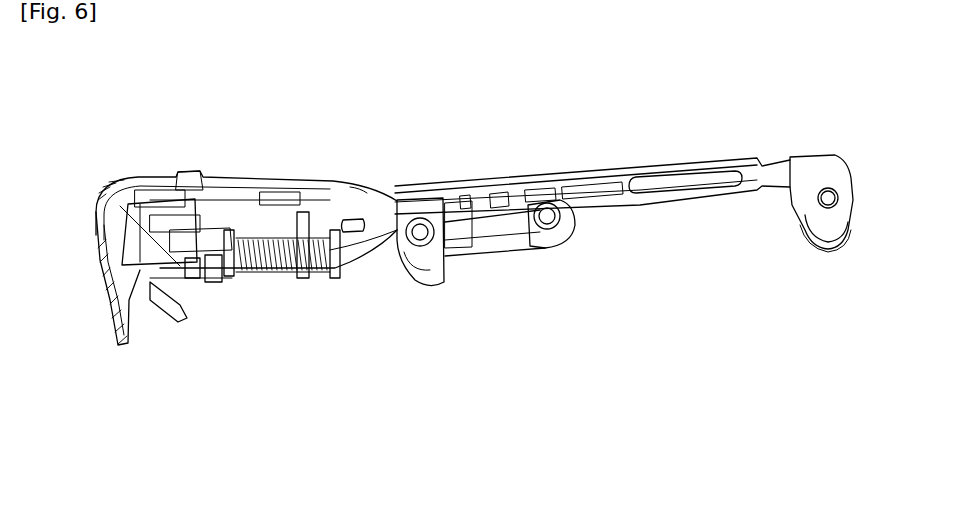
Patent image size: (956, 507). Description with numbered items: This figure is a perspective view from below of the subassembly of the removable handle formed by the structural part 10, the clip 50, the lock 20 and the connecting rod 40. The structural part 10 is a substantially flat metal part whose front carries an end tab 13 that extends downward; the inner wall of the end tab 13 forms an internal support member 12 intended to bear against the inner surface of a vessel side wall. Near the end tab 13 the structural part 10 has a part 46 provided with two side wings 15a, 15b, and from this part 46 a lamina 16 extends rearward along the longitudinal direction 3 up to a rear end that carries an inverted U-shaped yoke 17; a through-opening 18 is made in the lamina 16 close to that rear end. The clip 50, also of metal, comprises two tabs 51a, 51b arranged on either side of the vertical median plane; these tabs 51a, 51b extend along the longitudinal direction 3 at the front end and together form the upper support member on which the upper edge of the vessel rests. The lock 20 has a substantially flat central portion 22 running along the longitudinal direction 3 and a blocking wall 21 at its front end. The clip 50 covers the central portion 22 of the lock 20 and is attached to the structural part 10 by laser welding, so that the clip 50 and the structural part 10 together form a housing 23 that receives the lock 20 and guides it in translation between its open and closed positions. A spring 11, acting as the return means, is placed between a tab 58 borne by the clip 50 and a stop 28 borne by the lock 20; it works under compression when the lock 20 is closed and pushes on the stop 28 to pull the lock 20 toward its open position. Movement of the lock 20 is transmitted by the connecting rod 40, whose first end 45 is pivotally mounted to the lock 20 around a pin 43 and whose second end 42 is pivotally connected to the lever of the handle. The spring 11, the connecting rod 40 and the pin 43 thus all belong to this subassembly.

The longitudinal direction 3 is at (862, 173).
The structural part 10 is at (398, 193).
The spring 11 is at (277, 272).
The internal support member 12 is at (138, 288).
The end tab 13 is at (118, 272).
The side wing 15a is at (282, 195).
The side wing 15b is at (217, 280).
The lamina 16 is at (630, 193).
The inverted U-shaped yoke 17 is at (822, 173).
The through-opening 18 is at (597, 193).
The lock 20 is at (346, 222).
The blocking wall 21 is at (163, 257).
The central portion 22 is at (225, 268).
The housing 23 is at (297, 230).
The stop 28 is at (318, 255).
The connecting rod 40 is at (492, 235).
The second end 42 is at (528, 233).
The pin 43 is at (422, 240).
The first end 45 is at (447, 232).
The part provided with two side wings 46 is at (242, 220).
The clip 50 is at (273, 280).
The tab 51a is at (186, 245).
The tab 51b is at (194, 273).
The tab 58 is at (230, 278).